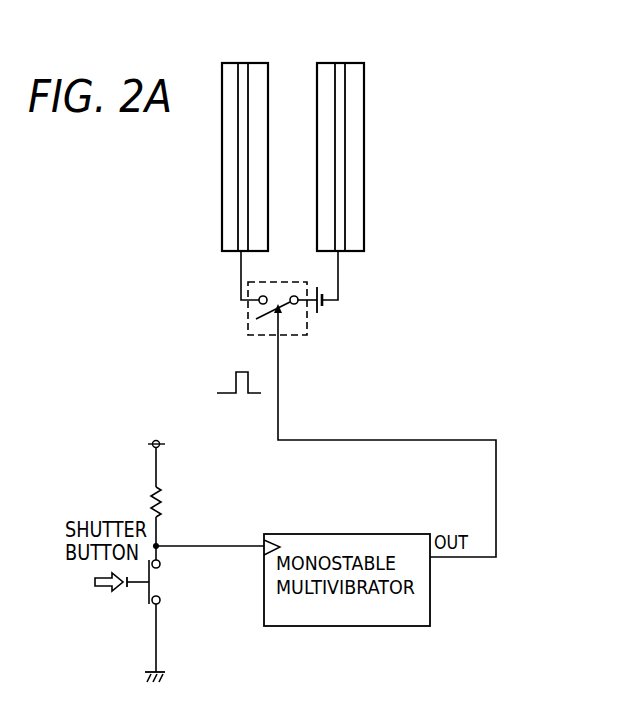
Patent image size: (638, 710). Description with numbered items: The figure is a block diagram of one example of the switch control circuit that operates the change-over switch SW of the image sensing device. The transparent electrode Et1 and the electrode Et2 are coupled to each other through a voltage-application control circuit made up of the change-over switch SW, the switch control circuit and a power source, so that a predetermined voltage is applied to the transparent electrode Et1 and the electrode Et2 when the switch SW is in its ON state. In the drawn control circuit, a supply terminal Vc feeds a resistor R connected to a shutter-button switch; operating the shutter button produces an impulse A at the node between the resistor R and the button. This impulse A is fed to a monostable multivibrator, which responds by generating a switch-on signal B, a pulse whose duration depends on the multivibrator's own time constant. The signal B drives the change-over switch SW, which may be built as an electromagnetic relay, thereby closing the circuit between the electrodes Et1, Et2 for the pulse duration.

The transparent electrode Et1 is at (241, 63).
The electrode Et2 is at (338, 63).
The change-over switch SW is at (296, 316).
The resistor R is at (165, 521).
The supply voltage terminal Vc is at (172, 459).
The impulse A is at (208, 534).
The switch-on signal B is at (387, 452).